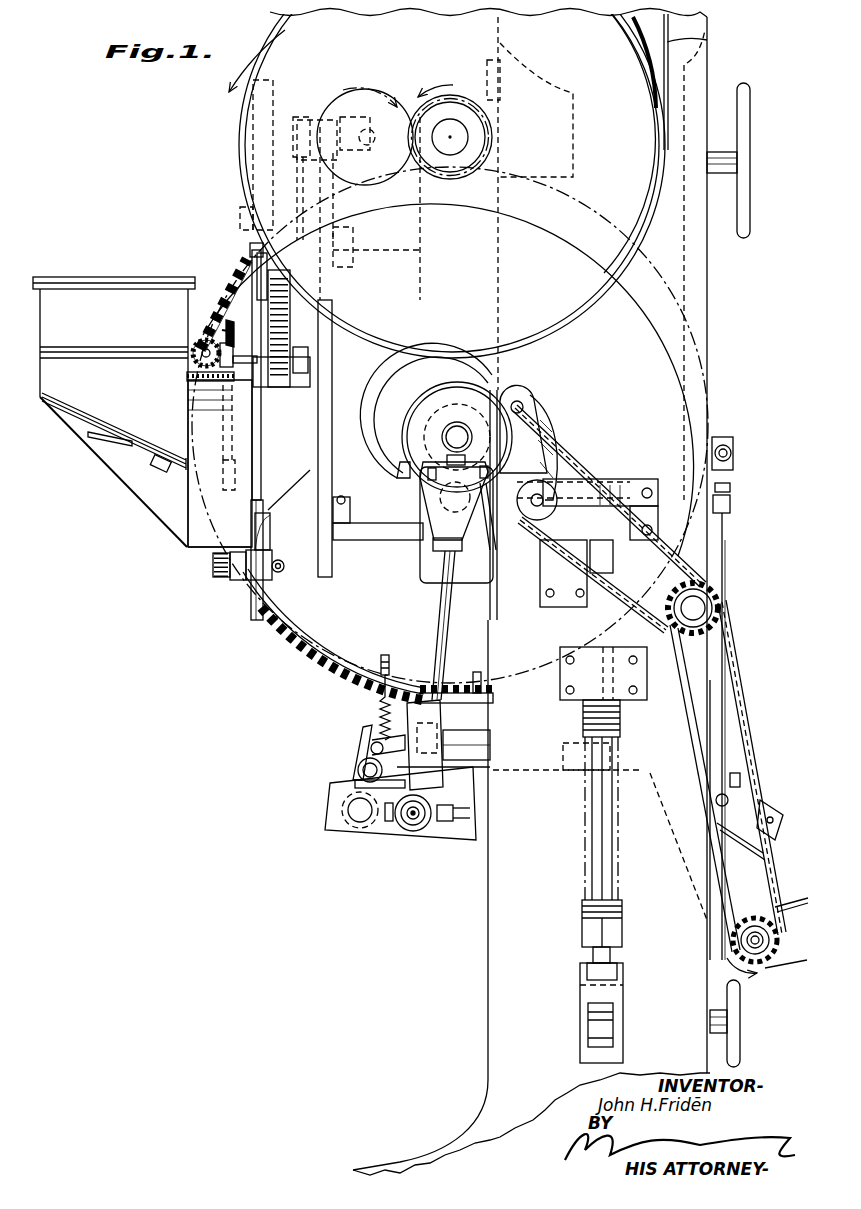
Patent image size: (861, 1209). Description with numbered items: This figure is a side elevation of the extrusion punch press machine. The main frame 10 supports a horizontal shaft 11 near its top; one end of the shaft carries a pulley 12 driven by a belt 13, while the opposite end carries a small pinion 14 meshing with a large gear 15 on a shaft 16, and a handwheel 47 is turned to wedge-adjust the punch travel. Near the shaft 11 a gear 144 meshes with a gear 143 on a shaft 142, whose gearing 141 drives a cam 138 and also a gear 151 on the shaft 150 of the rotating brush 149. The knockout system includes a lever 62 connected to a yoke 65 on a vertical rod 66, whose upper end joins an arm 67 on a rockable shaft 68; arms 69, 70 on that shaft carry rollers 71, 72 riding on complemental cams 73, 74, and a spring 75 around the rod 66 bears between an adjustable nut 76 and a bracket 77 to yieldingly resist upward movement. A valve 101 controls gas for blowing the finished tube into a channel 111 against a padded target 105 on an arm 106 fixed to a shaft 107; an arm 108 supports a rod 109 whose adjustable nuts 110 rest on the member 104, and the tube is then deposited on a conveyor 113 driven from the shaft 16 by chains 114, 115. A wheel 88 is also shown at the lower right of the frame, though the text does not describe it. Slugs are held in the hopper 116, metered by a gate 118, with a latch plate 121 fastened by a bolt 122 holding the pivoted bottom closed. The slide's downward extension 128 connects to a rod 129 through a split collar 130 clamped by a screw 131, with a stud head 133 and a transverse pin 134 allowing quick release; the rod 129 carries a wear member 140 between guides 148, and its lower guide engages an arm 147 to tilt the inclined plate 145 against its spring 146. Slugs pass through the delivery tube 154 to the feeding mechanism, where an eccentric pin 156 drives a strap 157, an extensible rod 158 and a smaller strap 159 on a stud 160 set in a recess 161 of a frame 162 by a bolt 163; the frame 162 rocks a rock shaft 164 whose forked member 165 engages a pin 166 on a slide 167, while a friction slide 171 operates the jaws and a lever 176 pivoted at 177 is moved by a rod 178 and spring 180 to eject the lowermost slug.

The main frame 10 is at (700, 286).
The shaft 11 is at (455, 137).
The pulley 12 is at (650, 87).
The belt 13 is at (688, 42).
The pinion 14 is at (488, 108).
The gear 15 is at (246, 259).
The shaft 16 is at (415, 438).
The handwheel 47 is at (750, 128).
The lever 62 is at (595, 1027).
The yoke 65 is at (623, 1000).
The rod 66 is at (608, 860).
The arm 67 is at (598, 484).
The rockable shaft or stud 68 is at (535, 508).
The arm 69 is at (553, 438).
The arm 70 is at (484, 520).
The roller 71 is at (520, 395).
The roller 72 is at (430, 490).
The cam 73 is at (492, 385).
The cam 74 is at (398, 405).
The spring 75 is at (621, 718).
The adjustable nut 76 is at (622, 940).
The bracket 77 is at (565, 675).
The wheel 88 is at (741, 1000).
The valve 101 is at (735, 455).
The member 104 is at (731, 505).
The target 105 is at (752, 842).
The arm 106 is at (783, 818).
The shaft 107 is at (712, 830).
The arm 108 is at (742, 797).
The rod 109 is at (726, 573).
The adjustable nuts 110 is at (731, 490).
The channel 111 is at (674, 832).
The conveyor 113 is at (791, 905).
The chain 114 is at (702, 585).
The chain 115 is at (750, 748).
The hopper 116 is at (78, 278).
The gate 118 is at (187, 310).
The latch plate 121 is at (133, 444).
The bolt 122 is at (157, 471).
The downward extension 128 is at (235, 582).
The rod 129 is at (252, 258).
The split collar 130 is at (275, 582).
The screw 131 is at (280, 560).
The enlarged head 133 is at (212, 562).
The pin 134 is at (270, 518).
The cam 138 is at (276, 205).
The member 140 is at (262, 276).
The gearing 141 is at (297, 124).
The shaft 142 is at (374, 150).
The gear 143 is at (372, 188).
The gear 144 is at (483, 157).
The inclined plate 145 is at (215, 376).
The spring 146 is at (200, 343).
The arm 147 is at (250, 380).
The guides 148 is at (300, 312).
The rotating brush 149 is at (224, 330).
The shaft 150 is at (229, 320).
The gear 151 is at (295, 375).
The delivery tube 154 is at (337, 650).
The eccentric pin 156 is at (455, 428).
The strap 157 is at (470, 425).
The extensible link or rod 158 is at (435, 605).
The strap 159 is at (405, 828).
The stud 160 is at (411, 822).
The recess 161 is at (428, 828).
The frame 162 is at (387, 830).
The bolt 163 is at (443, 825).
The rock shaft 164 is at (350, 822).
The forked member 165 is at (358, 766).
The pin 166 is at (371, 743).
The slide 167 is at (358, 774).
The slide 171 is at (462, 733).
The lever 176 is at (493, 687).
The pivot 177 is at (477, 672).
The rod 178 is at (385, 655).
The spring 180 is at (383, 699).